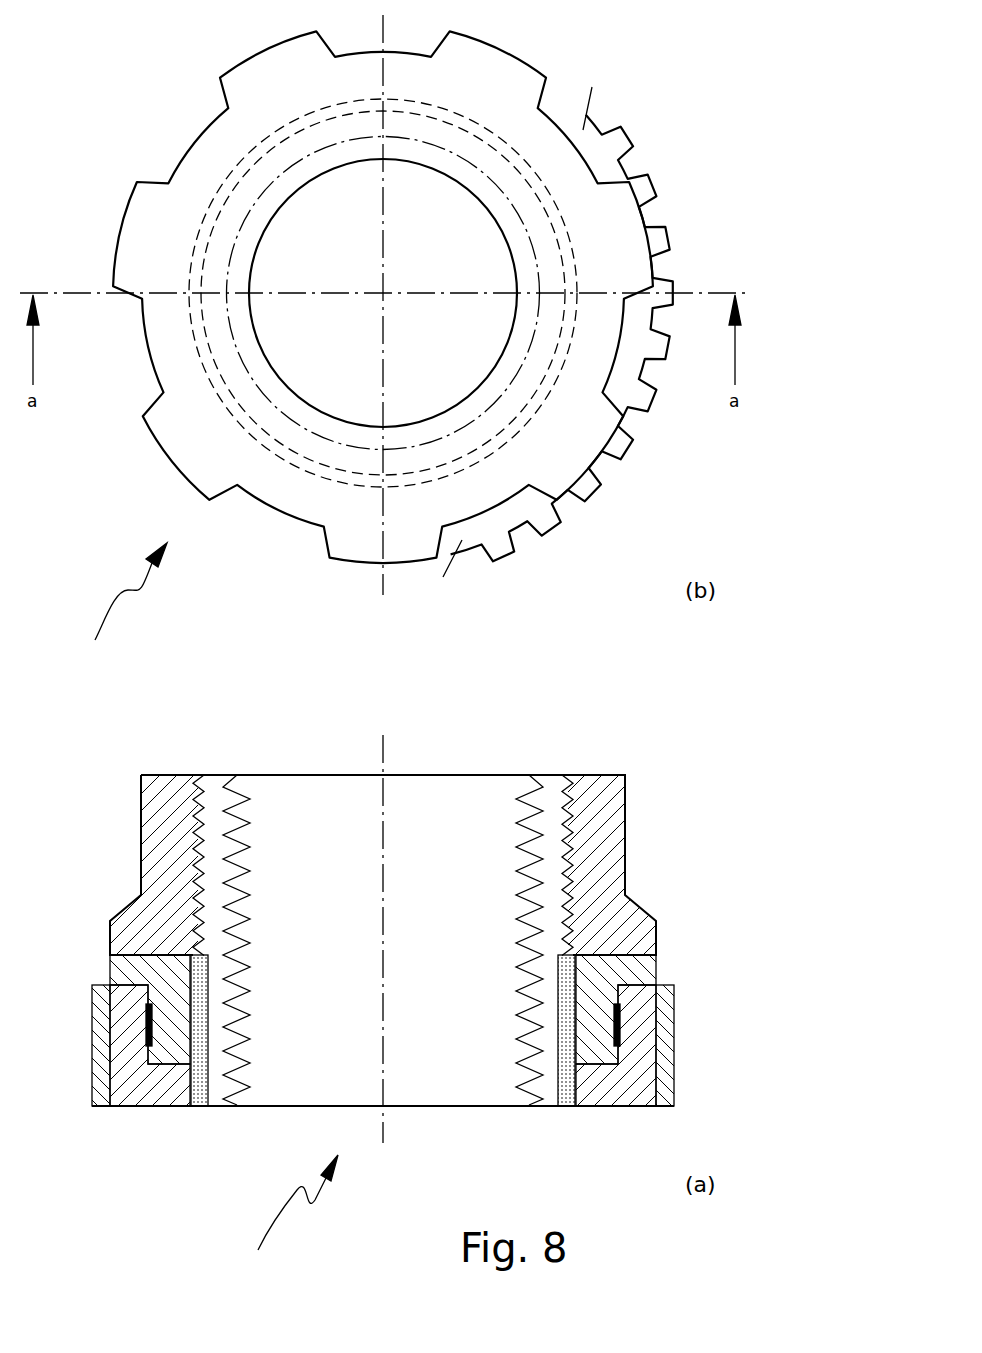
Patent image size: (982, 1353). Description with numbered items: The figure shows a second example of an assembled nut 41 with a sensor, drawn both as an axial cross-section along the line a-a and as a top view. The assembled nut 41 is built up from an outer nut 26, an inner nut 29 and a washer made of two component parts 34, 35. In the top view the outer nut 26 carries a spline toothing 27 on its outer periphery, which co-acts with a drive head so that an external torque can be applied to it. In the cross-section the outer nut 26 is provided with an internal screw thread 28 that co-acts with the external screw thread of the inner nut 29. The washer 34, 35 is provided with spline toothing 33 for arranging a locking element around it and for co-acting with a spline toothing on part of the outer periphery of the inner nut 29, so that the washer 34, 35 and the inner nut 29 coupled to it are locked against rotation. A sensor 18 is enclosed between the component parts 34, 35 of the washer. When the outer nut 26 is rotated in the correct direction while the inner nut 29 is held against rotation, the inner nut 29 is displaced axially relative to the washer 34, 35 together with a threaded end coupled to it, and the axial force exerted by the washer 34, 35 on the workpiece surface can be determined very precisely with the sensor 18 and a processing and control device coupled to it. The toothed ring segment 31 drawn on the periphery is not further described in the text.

The sensor 18 is at (615, 1025).
The outer nut 26 is at (605, 853).
The spline toothing 27 is at (498, 63).
The internal screw thread 28 is at (571, 820).
The inner nut 29 is at (547, 1093).
The toothed ring 31 is at (638, 395).
The spline toothing 33 is at (552, 1092).
The washer component part 34 is at (630, 965).
The washer component part 35 is at (612, 1107).
The assembled nut 41 is at (209, 911).